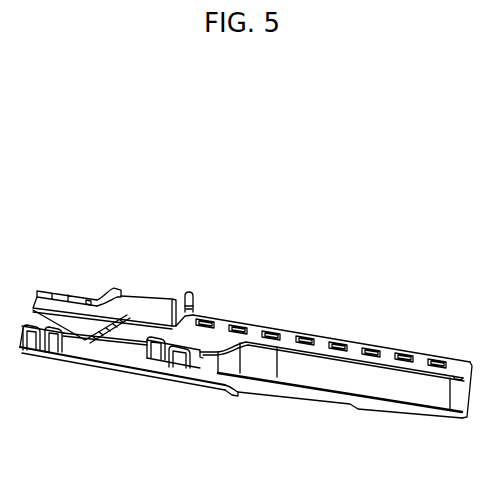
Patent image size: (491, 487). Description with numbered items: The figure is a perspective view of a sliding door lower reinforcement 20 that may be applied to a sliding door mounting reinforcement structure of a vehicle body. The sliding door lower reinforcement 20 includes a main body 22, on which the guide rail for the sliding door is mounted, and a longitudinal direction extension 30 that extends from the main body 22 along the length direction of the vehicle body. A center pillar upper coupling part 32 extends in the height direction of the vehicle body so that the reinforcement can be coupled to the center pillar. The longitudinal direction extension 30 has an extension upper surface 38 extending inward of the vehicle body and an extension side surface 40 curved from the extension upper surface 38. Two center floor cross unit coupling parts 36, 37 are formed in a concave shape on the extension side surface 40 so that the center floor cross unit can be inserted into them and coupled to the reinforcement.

The sliding door lower reinforcement 20 is at (308, 329).
The main body 22 is at (385, 343).
The longitudinal direction extension 30 is at (90, 376).
The center pillar upper coupling part 32 is at (180, 306).
The center floor cross unit coupling part 36 is at (58, 352).
The center floor cross unit coupling part 37 is at (180, 373).
The extension upper surface 38 is at (134, 326).
The extension side surface 40 is at (137, 356).